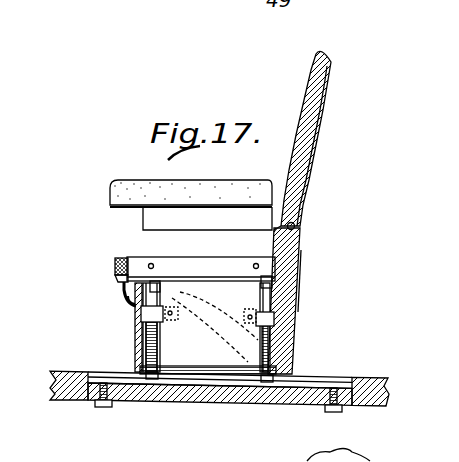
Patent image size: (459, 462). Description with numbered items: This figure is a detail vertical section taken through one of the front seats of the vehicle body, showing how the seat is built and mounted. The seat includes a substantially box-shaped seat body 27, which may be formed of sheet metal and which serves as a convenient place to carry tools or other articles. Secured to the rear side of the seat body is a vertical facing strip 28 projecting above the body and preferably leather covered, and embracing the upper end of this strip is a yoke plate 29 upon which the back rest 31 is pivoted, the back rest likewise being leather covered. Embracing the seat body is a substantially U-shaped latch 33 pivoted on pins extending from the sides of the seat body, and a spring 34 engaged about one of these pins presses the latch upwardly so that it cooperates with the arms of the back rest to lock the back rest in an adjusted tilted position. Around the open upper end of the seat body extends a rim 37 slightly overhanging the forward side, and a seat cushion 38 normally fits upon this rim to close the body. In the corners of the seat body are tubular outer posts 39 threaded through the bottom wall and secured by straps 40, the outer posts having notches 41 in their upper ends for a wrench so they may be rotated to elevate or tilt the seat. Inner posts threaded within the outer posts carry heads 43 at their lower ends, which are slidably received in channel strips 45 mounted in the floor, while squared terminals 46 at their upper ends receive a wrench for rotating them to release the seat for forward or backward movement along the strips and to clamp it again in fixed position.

The seat body 27 is at (197, 354).
The facing strip 28 is at (290, 297).
The yoke plate 29 is at (300, 241).
The back rest 31 is at (312, 132).
The latch 33 is at (133, 294).
The spring 34 is at (128, 306).
The rim 37 is at (201, 273).
The seat cushion 38 is at (110, 187).
The tubular outer posts 39 is at (148, 331).
The straps 40 is at (160, 320).
The notches 41 is at (162, 286).
The heads 43 is at (258, 398).
The channel strips 45 is at (285, 408).
The squared terminals 46 is at (158, 282).